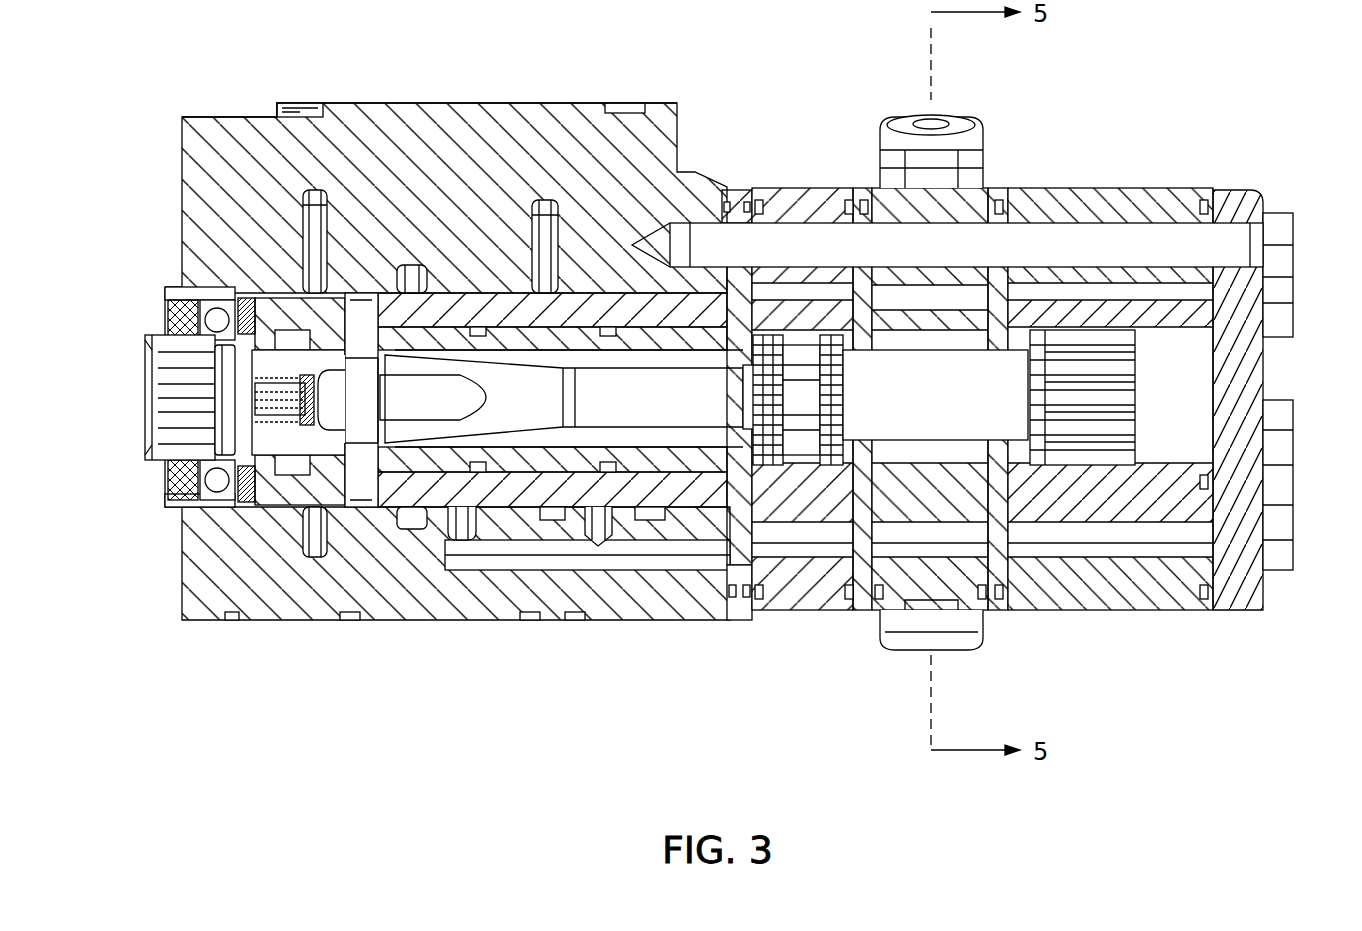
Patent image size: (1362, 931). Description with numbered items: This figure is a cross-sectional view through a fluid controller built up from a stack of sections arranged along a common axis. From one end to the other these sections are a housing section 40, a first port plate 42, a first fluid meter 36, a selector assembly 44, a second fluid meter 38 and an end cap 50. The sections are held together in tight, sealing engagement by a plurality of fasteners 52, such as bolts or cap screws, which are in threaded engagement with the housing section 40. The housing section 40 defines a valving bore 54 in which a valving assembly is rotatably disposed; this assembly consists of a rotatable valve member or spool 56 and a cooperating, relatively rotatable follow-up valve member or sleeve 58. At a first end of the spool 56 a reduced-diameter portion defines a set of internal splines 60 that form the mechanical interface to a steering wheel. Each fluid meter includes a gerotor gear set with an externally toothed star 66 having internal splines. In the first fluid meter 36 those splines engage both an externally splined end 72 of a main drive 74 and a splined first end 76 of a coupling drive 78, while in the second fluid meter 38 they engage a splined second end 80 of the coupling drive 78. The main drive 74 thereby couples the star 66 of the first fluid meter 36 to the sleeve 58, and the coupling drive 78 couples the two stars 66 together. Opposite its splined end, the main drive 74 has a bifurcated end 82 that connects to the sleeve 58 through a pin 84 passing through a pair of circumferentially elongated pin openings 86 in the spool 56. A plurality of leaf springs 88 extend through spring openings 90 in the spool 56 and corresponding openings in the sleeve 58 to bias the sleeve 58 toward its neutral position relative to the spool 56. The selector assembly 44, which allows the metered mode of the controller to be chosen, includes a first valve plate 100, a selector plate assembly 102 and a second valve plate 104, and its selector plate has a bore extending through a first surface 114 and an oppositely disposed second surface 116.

The first fluid meter 36 is at (805, 618).
The second fluid meter 38 is at (1100, 612).
The housing section 40 is at (495, 94).
The first port plate 42 is at (748, 200).
The selector assembly 44 is at (1013, 124).
The end cap 50 is at (1237, 192).
The fasteners 52 is at (1295, 245).
The valving bore 54 is at (470, 300).
The rotatable valve member (spool) 56 is at (418, 460).
The follow-up valve member (sleeve) 58 is at (517, 485).
The internal splines 60 is at (148, 445).
The externally toothed star 66 is at (1115, 305).
The externally splined end 72 is at (750, 402).
The main drive 74 is at (564, 399).
The splined first end 76 is at (845, 363).
The coupling drive 78 is at (935, 395).
The splined second end 80 is at (1032, 420).
The bifurcated end 82 is at (405, 362).
The pin 84 is at (362, 308).
The pin openings 86 is at (360, 317).
The leaf springs 88 is at (272, 372).
The spring openings 90 is at (262, 430).
The first valve plate 100 is at (868, 612).
The selector plate assembly 102 is at (970, 654).
The second valve plate 104 is at (1005, 600).
The first surface 114 is at (866, 222).
The second surface 116 is at (1005, 200).